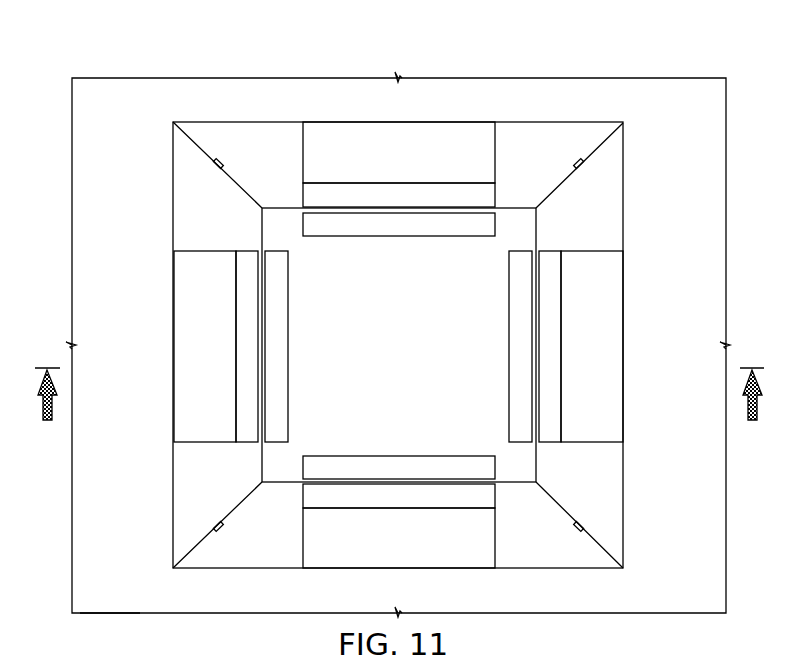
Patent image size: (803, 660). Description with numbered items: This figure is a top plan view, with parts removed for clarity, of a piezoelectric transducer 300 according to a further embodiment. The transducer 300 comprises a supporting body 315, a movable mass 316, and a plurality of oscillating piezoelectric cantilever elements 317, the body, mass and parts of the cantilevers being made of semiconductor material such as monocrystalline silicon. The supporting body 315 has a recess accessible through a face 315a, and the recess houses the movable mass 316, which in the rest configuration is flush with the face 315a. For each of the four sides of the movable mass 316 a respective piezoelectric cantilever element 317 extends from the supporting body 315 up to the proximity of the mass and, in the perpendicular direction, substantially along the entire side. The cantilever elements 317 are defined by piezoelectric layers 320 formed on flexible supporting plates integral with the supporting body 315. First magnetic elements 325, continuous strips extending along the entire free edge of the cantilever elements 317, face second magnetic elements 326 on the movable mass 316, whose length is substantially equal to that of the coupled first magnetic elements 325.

The piezoelectric transducer 300 is at (397, 338).
The supporting body 315 is at (110, 88).
The face 315a is at (113, 598).
The movable mass 316 is at (409, 356).
The piezoelectric cantilever elements 317 is at (292, 168).
The piezoelectric layers 320 is at (350, 130).
The first magnetic elements 325 is at (245, 255).
The second magnetic elements 326 is at (323, 236).